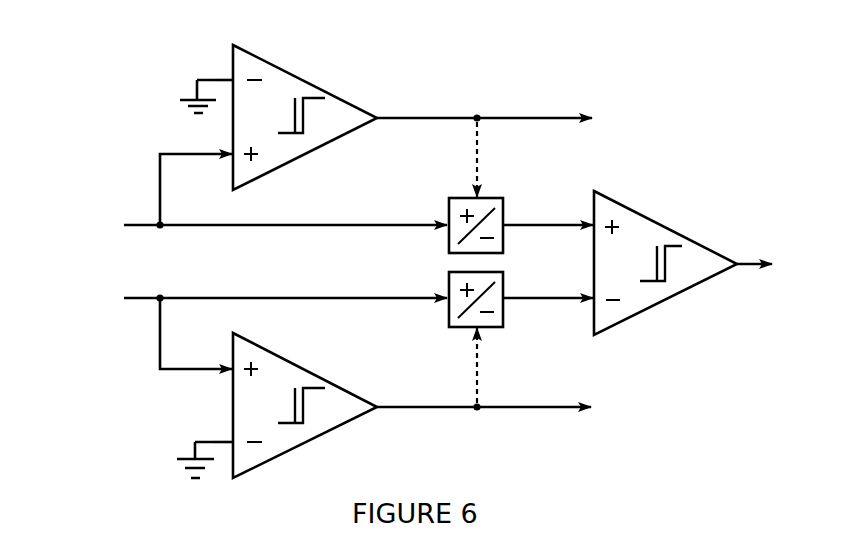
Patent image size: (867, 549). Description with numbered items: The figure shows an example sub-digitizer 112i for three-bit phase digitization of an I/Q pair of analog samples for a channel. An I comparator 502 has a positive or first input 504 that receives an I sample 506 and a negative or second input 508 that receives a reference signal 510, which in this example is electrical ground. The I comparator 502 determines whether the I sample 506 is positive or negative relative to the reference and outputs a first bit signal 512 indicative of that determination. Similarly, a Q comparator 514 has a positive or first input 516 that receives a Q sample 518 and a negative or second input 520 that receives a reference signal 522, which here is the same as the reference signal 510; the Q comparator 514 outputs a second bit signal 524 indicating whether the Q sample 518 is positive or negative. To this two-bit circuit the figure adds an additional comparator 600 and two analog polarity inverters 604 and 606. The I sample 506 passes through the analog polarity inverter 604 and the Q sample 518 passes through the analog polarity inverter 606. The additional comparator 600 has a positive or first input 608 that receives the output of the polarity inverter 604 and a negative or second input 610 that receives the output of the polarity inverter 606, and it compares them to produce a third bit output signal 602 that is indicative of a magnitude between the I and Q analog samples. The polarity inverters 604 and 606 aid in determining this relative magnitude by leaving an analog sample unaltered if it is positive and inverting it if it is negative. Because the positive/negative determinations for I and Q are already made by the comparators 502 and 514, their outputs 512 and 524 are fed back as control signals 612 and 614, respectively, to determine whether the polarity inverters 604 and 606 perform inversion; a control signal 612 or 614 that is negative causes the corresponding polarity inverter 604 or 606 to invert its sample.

The sub-digitizer 112i is at (606, 43).
The I comparator 502 is at (298, 72).
The positive or first input 504 is at (230, 160).
The I sample 506 is at (96, 203).
The negative or second input 508 is at (231, 78).
The reference signal 510 is at (172, 95).
The signal (b0) 512 is at (450, 106).
The Q comparator 514 is at (298, 362).
The positive or first input 516 is at (230, 366).
The Q sample 518 is at (98, 283).
The negative or second input 520 is at (230, 436).
The reference signal 522 is at (188, 442).
The signal (b1) 524 is at (444, 415).
The additional comparator 600 is at (620, 197).
The output signal (b2) 602 is at (776, 249).
The analog polarity inverter 604 is at (457, 198).
The analog polarity inverter 606 is at (455, 328).
The positive or first input 608 is at (592, 220).
The negative or second input 610 is at (592, 307).
The control signal 612 is at (483, 153).
The control signal 614 is at (482, 373).